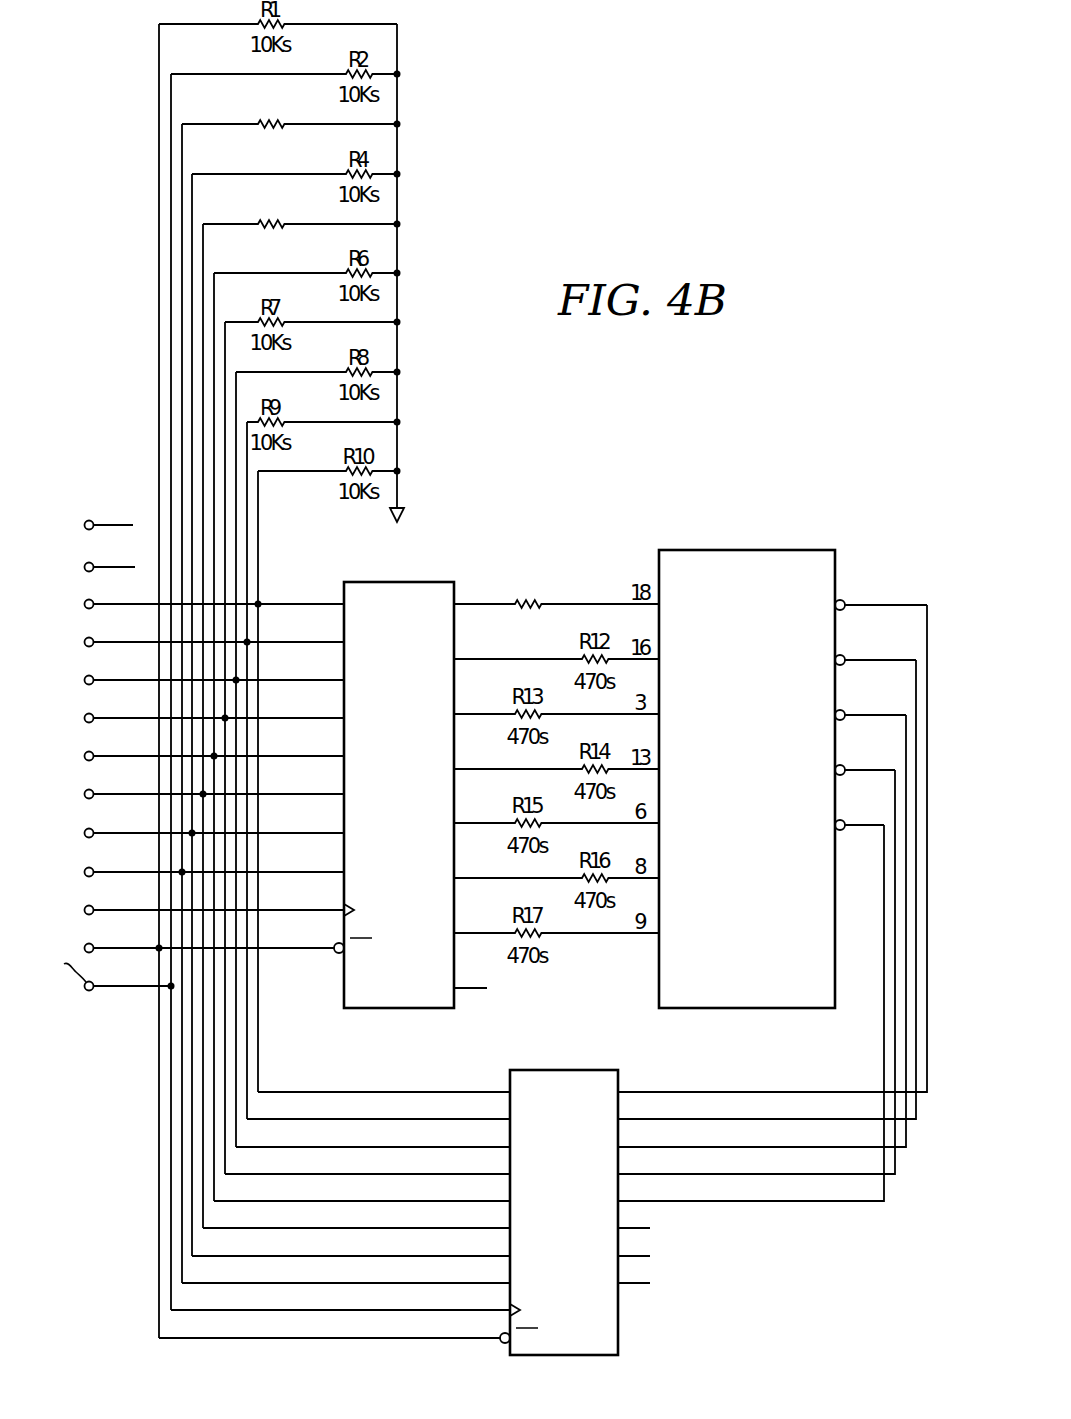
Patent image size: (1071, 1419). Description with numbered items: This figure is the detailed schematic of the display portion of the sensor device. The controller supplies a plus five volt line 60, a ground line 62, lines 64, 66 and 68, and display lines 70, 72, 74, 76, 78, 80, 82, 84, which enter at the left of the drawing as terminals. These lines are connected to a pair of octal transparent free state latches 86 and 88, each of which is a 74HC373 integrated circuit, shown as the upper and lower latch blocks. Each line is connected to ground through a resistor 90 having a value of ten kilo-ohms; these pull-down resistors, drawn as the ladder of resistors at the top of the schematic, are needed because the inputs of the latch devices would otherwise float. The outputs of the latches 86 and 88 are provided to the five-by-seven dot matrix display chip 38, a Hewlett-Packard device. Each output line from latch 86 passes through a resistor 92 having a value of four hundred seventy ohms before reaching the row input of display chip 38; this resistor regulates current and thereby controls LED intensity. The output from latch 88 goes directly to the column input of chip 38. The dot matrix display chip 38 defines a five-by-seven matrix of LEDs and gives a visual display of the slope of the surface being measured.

The +5 volt line 60 is at (198, 733).
The ground line 62 is at (86, 521).
The display line 70 is at (86, 563).
The display line 72 is at (86, 600).
The display line 74 is at (86, 638).
The display line 76 is at (86, 676).
The display line 78 is at (86, 714).
The display line 80 is at (86, 752).
The display line 82 is at (86, 790).
The display line 84 is at (86, 829).
The line 64 is at (86, 868).
The line 68 is at (86, 906).
The line 66 is at (86, 944).
The resistor 90 is at (285, 122).
The resistor 92 is at (543, 603).
The octal transparent free state latch 86 is at (344, 978).
The octal transparent free state latch 88 is at (618, 1315).
The dot matrix display chip 38 is at (767, 550).